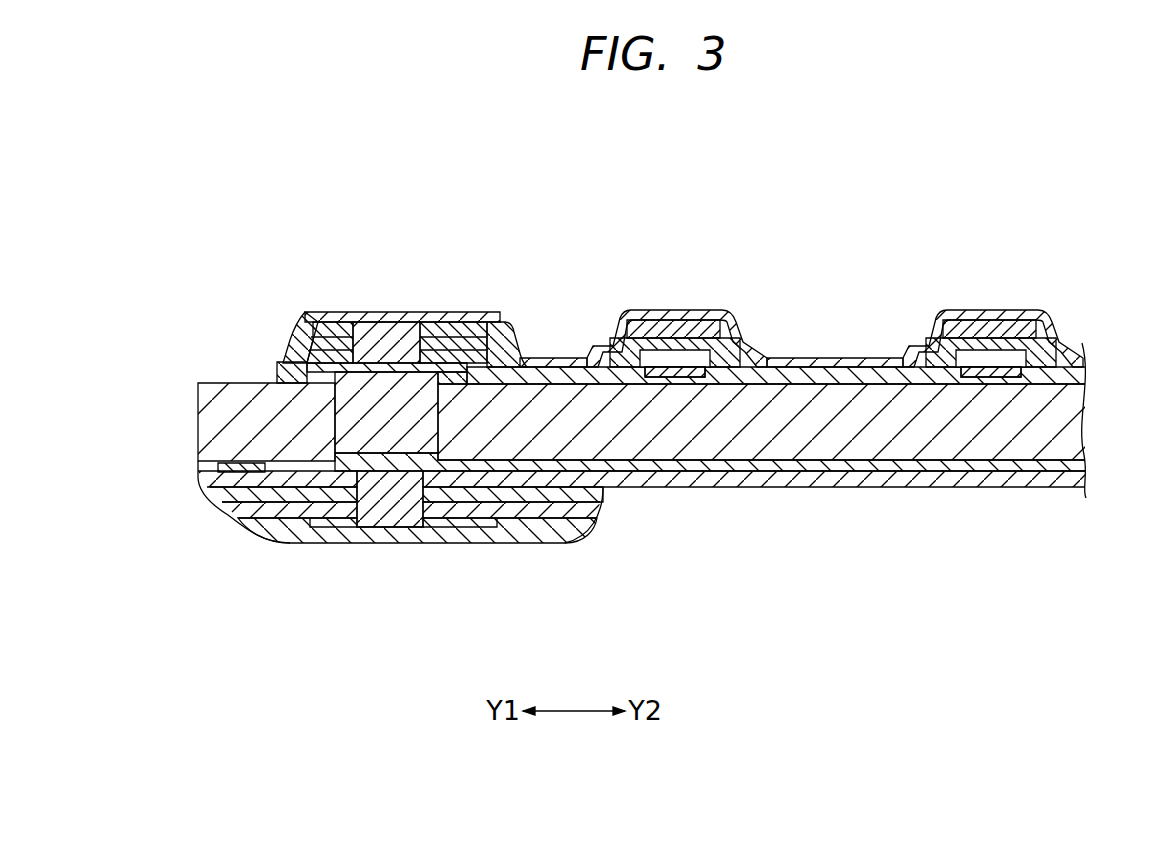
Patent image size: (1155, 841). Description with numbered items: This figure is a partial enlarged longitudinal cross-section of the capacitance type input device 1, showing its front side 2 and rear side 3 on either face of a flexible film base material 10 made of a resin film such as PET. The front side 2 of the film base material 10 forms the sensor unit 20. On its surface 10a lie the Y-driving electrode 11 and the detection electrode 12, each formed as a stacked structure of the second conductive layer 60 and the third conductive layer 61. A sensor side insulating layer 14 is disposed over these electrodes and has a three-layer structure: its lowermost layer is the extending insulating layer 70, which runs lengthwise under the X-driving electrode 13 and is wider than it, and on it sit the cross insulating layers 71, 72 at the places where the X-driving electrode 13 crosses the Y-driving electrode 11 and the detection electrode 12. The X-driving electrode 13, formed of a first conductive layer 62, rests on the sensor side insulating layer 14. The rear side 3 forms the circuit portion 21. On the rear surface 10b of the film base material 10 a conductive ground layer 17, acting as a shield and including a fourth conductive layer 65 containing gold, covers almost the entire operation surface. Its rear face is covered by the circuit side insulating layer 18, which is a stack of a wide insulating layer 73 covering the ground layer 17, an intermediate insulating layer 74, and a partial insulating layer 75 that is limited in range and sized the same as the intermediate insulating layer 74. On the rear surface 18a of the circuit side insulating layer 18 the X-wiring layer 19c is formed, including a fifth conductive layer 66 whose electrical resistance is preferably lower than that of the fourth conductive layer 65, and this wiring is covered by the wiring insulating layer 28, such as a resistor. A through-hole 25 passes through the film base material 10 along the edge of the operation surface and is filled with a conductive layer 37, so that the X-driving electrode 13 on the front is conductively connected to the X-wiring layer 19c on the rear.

The capacitance type input device 1 is at (669, 366).
The front side 2 is at (681, 264).
The rear side 3 is at (641, 546).
The film base material 10 is at (1072, 415).
The surface of the film base material 10a is at (833, 368).
The rear surface of the film base material 10b is at (1008, 465).
The Y-driving electrode 11 is at (677, 277).
The detection electrode 12 is at (987, 372).
The X-driving electrode 13 is at (627, 310).
The sensor side insulating layer 14 is at (450, 267).
The ground layer 17 is at (641, 517).
The fourth conductive layer 65 is at (857, 467).
The circuit side insulating layer 18 is at (466, 550).
The rear surface of the circuit side insulating layer 18a is at (550, 522).
The X-wiring layer 19c is at (409, 546).
The fifth conductive layer 66 is at (388, 524).
The sensor unit 20 is at (776, 293).
The circuit portion 21 is at (641, 546).
The through-hole 25 is at (385, 393).
The wiring insulating layer 28 is at (488, 537).
The conductive layer 37 is at (365, 433).
The second conductive layer 60 is at (690, 375).
The third conductive layer 61 is at (683, 372).
The first conductive layer 62 is at (438, 320).
The extending insulating layer 70 is at (518, 357).
The cross insulating layer 71 is at (470, 343).
The cross insulating layer 72 is at (467, 333).
The wide insulating layer 73 is at (718, 478).
The intermediate insulating layer 74 is at (600, 488).
The partial insulating layer 75 is at (419, 550).